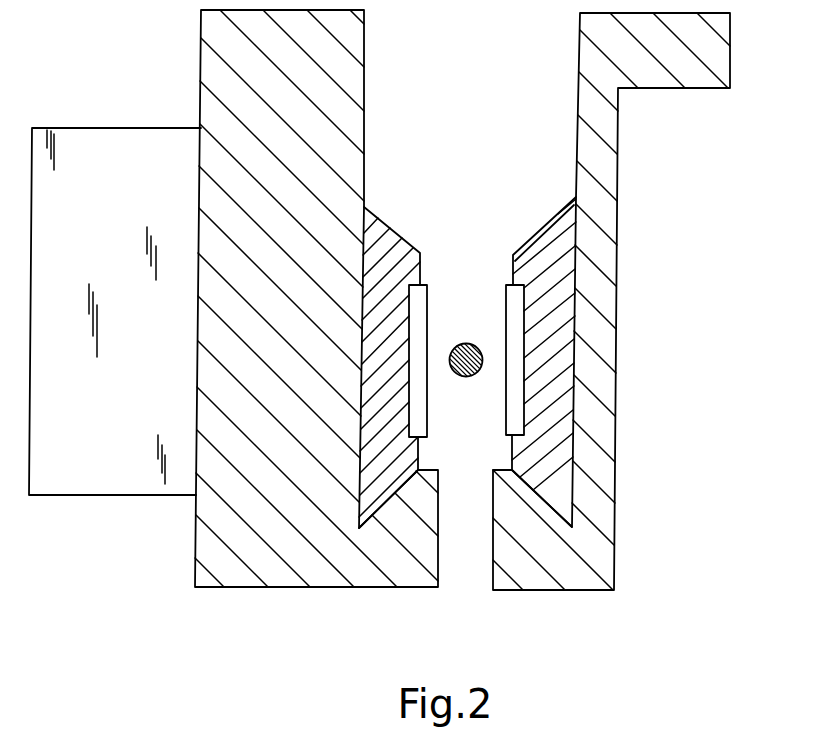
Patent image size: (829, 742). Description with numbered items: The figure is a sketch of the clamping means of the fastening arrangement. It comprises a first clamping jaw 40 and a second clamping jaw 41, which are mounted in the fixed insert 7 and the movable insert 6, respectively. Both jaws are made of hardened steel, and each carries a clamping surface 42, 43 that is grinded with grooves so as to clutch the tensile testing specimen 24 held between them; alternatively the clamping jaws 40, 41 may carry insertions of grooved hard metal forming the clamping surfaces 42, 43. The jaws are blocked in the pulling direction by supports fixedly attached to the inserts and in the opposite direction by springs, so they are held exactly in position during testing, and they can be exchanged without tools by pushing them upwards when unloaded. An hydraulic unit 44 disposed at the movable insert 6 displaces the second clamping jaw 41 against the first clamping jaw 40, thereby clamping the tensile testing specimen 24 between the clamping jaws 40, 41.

The movable insert 6 is at (300, 555).
The fixed insert 7 is at (600, 293).
The tensile testing specimen 24 is at (455, 343).
The first clamping jaw 40 is at (543, 475).
The second clamping jaw 41 is at (380, 483).
The clamping surface 42 is at (427, 393).
The clamping surface 43 is at (506, 397).
The hydraulic unit 44 is at (80, 465).